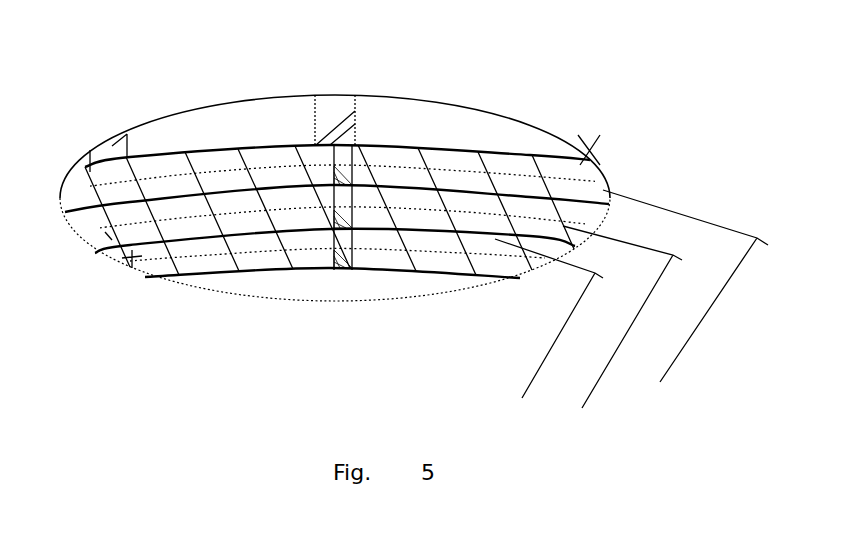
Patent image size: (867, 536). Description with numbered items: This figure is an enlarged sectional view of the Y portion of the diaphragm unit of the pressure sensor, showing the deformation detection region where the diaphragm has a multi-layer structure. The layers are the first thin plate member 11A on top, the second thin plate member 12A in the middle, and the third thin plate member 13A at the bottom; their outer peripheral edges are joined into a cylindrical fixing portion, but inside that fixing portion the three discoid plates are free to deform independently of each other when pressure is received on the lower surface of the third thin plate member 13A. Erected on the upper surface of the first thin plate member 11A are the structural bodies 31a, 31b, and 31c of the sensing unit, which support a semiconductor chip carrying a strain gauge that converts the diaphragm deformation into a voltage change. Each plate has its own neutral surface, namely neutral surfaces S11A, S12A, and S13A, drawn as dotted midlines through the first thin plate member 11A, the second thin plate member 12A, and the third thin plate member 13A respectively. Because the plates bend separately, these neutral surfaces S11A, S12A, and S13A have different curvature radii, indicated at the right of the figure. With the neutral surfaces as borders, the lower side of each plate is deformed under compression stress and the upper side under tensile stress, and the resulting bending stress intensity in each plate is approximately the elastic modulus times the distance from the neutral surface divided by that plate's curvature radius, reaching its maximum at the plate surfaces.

The Y portion Y is at (200, 108).
The first thin plate member 11A is at (127, 220).
The second thin plate member 12A is at (140, 256).
The third thin plate member 13A is at (140, 256).
The structural body 31a is at (114, 150).
The structural body 31b is at (333, 106).
The structural body 31c is at (583, 153).
The neutral surface S11A is at (453, 171).
The neutral surface S12A is at (458, 255).
The neutral surface S13A is at (487, 260).